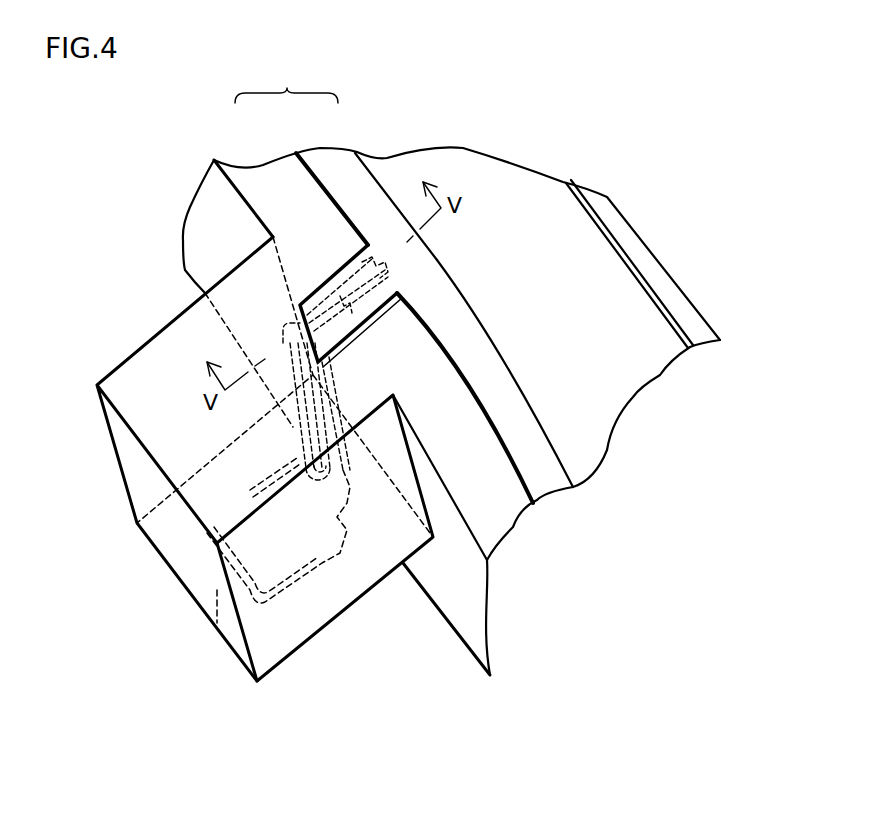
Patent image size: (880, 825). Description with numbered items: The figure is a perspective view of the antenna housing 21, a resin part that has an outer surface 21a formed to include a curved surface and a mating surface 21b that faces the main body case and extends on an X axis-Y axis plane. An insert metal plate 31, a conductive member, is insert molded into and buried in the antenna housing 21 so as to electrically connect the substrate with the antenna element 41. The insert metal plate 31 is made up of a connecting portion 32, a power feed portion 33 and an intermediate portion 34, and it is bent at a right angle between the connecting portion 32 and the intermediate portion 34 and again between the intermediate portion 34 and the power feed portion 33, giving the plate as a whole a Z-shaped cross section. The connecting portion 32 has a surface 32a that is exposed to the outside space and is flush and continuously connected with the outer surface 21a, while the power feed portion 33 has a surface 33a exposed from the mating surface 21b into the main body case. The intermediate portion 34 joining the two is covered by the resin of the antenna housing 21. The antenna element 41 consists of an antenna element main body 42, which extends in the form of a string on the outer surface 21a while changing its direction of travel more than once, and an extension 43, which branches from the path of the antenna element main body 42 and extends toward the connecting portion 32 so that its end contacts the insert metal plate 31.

The antenna housing 21 is at (677, 259).
The outer surface 21a is at (502, 227).
The mating surface 21b is at (217, 623).
The insert metal plate 31 is at (333, 366).
The connecting portion 32 is at (300, 345).
The surface 32a is at (296, 325).
The power feed portion 33 is at (323, 567).
The surface 33a is at (272, 553).
The intermediate portion 34 is at (322, 405).
The antenna element 41 is at (286, 82).
The antenna element main body 42 is at (338, 170).
The extension 43 is at (327, 315).